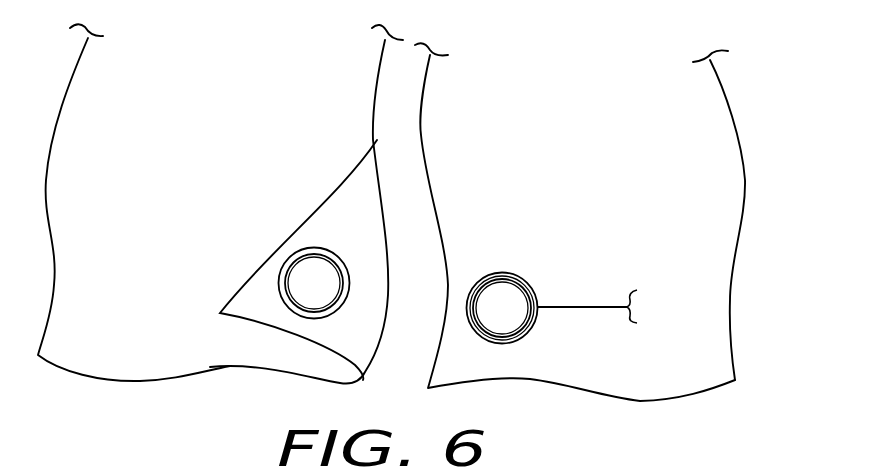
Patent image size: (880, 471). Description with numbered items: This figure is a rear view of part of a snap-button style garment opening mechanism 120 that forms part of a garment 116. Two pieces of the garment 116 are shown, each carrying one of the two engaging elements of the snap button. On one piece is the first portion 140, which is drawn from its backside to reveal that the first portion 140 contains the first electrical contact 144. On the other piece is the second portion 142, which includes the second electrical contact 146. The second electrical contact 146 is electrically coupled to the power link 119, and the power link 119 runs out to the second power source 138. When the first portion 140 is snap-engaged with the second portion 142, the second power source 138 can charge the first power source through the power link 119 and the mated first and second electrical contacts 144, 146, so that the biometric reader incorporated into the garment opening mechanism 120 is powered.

The garment 116 is at (297, 127).
The first electrical contact 144 is at (328, 247).
The garment opening mechanism 120 is at (273, 275).
The first portion 140 is at (292, 252).
The second portion 142 is at (488, 292).
The second electrical contact 146 is at (532, 290).
The power link 119 is at (608, 310).
The second power source 138 is at (727, 311).